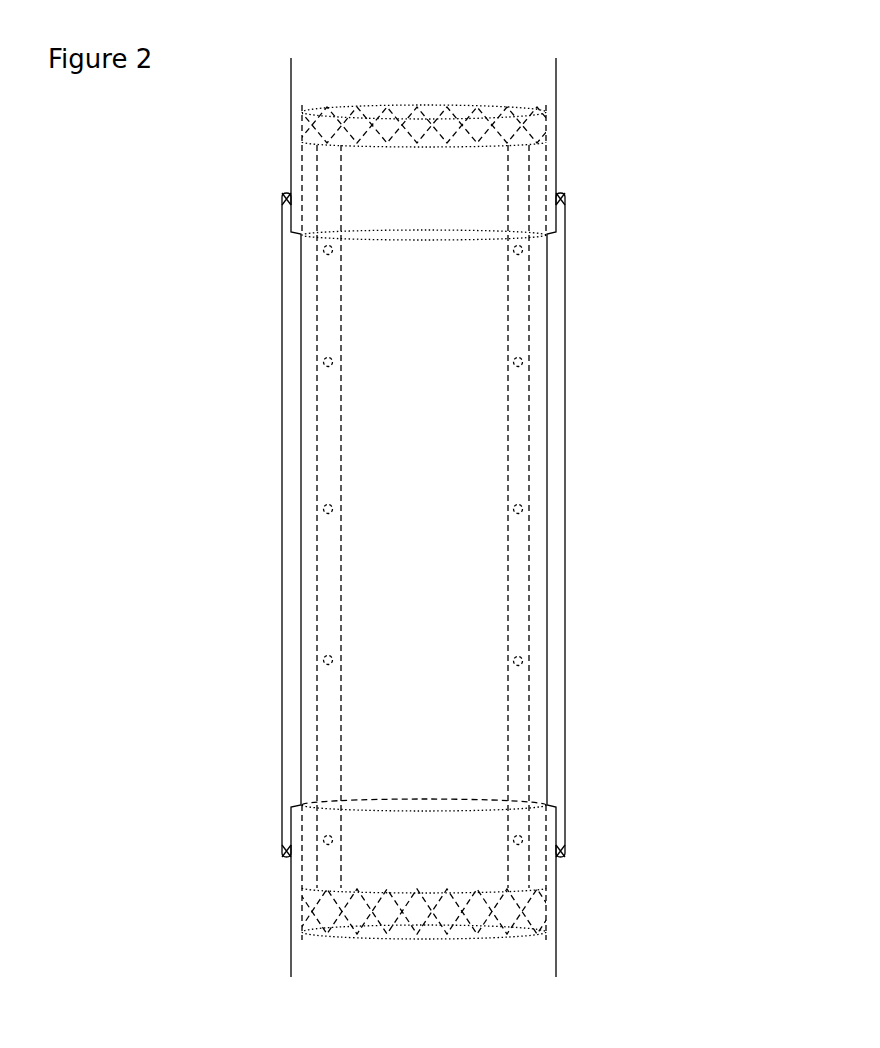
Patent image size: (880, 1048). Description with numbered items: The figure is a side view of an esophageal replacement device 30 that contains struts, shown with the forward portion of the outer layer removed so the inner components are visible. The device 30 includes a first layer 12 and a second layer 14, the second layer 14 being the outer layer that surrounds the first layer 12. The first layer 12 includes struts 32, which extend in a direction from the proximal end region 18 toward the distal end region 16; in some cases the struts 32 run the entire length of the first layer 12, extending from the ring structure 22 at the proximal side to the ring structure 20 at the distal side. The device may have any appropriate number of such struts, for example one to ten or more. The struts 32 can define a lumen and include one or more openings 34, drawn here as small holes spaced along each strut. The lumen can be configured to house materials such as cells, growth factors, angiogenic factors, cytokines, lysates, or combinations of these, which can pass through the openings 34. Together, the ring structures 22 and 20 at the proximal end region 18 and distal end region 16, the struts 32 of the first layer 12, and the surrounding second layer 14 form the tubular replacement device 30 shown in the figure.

The device 30 is at (684, 49).
The first layer 12 is at (546, 395).
The second layer 14 is at (565, 462).
The distal end region 16 is at (465, 940).
The proximal end region 18 is at (425, 105).
The ring structure 20 is at (546, 910).
The ring structure 22 is at (548, 128).
The struts 32 is at (325, 332).
The openings 34 is at (522, 509).